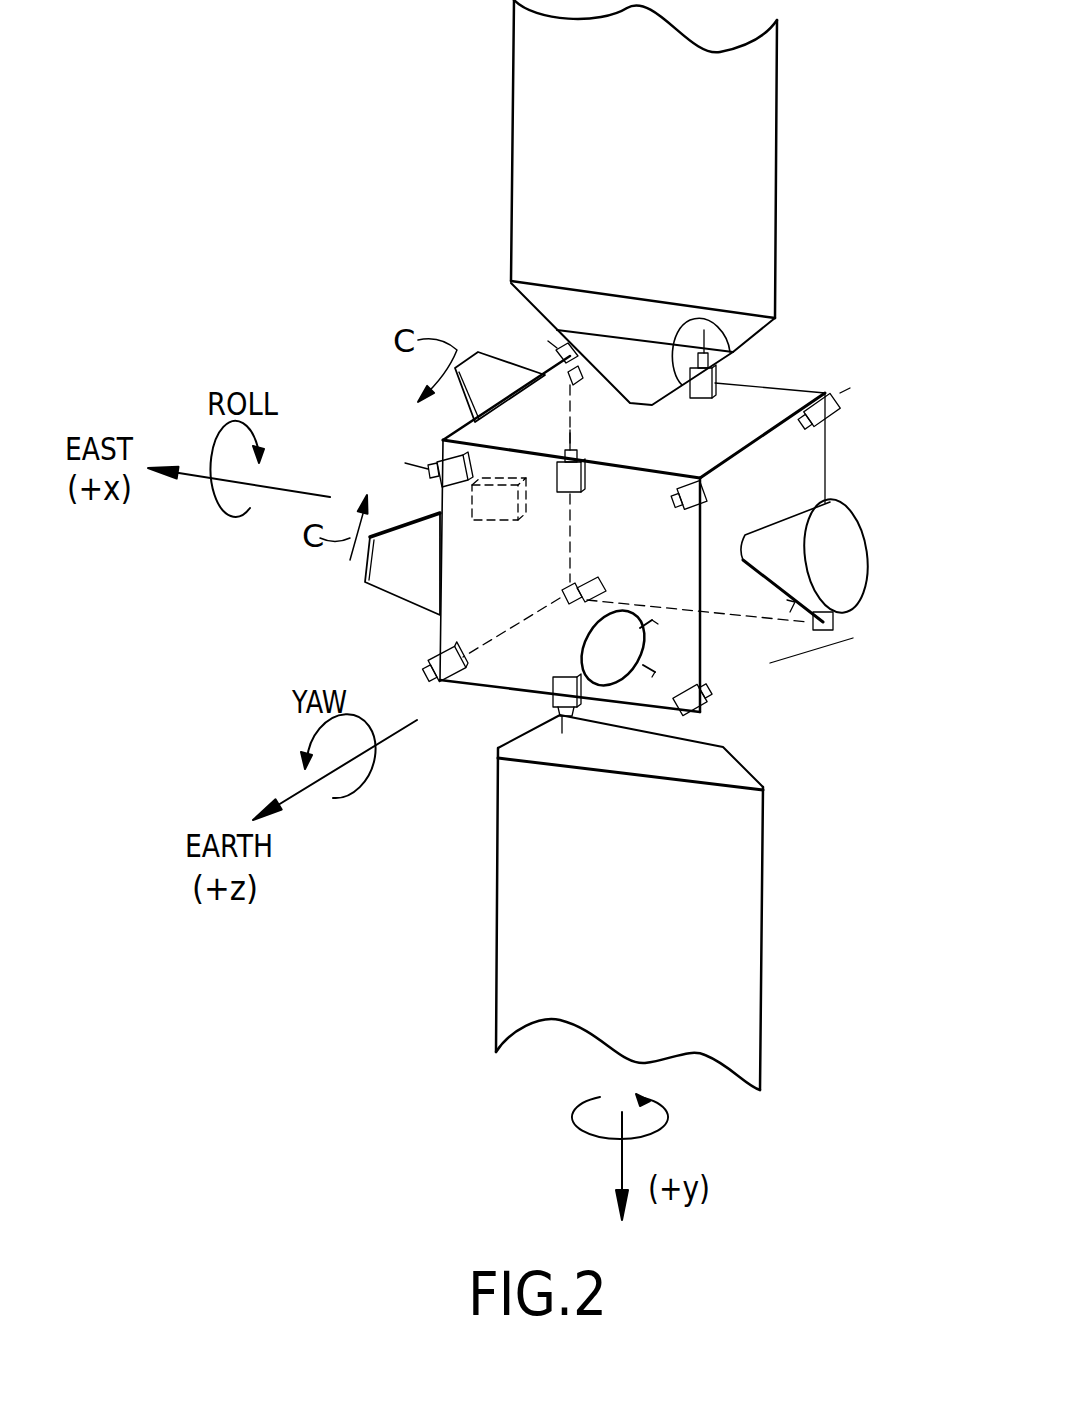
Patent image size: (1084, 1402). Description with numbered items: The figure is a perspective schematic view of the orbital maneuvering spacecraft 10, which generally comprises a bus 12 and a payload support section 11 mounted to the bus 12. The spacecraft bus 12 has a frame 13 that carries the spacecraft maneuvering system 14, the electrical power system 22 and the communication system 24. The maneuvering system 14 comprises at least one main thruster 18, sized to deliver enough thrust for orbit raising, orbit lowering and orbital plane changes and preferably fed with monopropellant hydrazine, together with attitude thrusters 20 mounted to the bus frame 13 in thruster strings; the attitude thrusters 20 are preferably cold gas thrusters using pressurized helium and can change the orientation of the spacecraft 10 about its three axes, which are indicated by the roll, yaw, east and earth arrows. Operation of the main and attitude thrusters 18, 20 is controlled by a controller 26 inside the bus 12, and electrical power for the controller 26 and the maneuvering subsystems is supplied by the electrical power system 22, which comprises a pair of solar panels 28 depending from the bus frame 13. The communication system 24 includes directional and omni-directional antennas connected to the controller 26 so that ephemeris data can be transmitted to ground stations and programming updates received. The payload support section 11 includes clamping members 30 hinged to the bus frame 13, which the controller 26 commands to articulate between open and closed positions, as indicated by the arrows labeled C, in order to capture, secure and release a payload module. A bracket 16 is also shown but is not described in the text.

The orbital maneuvering spacecraft 10 is at (848, 298).
The payload support section 11 is at (480, 372).
The spacecraft bus 12 is at (465, 590).
The bus frame 13 is at (641, 531).
The spacecraft maneuvering system 14 is at (800, 528).
The solar array yoke bracket sensor 16 is at (757, 405).
The main thruster 18 is at (867, 560).
The attitude thrusters 20 is at (705, 705).
The electrical power system 22 is at (780, 84).
The communication system 24 is at (612, 640).
The controller 26 is at (452, 438).
The solar panels 28 is at (652, 201).
The clamping members 30 is at (498, 376).